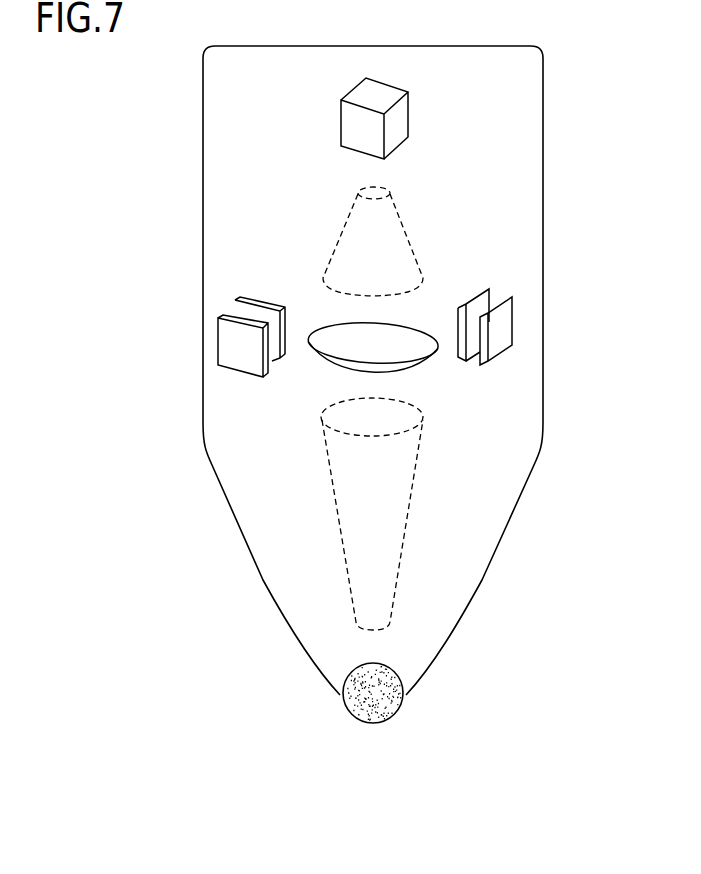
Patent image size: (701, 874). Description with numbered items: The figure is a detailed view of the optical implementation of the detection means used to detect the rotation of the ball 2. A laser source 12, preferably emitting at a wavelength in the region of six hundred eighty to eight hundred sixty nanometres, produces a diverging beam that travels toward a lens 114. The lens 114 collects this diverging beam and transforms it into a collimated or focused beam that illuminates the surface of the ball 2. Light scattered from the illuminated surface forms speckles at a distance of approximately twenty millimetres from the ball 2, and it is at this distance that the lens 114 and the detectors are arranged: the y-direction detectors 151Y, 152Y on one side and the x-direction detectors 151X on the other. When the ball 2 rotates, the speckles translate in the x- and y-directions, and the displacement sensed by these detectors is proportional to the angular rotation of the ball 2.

The laser source 12 is at (336, 92).
The detector 151Y is at (227, 305).
The detector 152Y is at (190, 322).
The detector 151X is at (519, 308).
The lens 114 is at (325, 373).
The ball 2 is at (337, 702).